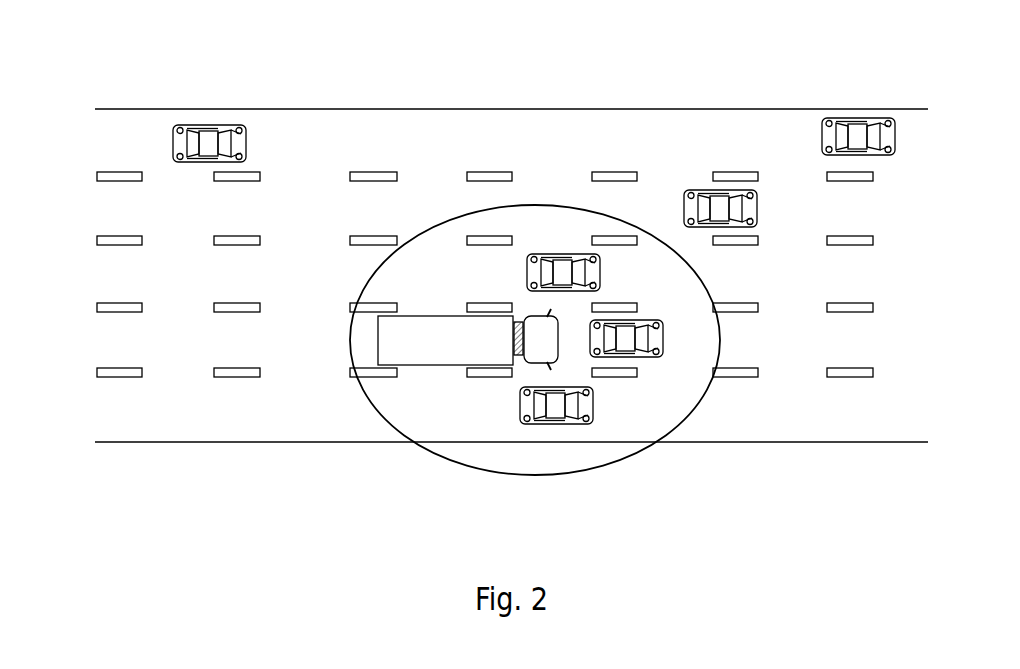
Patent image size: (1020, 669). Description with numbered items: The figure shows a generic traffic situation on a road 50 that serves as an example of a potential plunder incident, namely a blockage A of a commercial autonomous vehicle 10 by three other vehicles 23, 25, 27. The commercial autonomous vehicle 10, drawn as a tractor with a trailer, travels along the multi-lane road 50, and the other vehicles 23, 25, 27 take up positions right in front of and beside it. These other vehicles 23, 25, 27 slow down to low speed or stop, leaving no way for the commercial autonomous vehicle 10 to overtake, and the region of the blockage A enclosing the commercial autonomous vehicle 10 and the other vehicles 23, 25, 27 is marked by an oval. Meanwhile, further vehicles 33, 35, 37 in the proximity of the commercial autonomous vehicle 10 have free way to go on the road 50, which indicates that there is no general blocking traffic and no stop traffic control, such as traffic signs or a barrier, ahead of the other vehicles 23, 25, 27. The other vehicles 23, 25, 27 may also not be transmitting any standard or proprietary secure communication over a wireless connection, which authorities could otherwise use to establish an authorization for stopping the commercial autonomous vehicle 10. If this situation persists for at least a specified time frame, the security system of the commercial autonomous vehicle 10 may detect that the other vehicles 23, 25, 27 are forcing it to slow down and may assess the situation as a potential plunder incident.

The commercial autonomous vehicle 10 is at (437, 365).
The other vehicle 23 is at (563, 425).
The other vehicle 25 is at (645, 358).
The other vehicle 27 is at (555, 255).
The further vehicle 33 is at (192, 126).
The further vehicle 35 is at (707, 190).
The further vehicle 37 is at (838, 118).
The road 50 is at (395, 84).
The blockage A is at (350, 342).